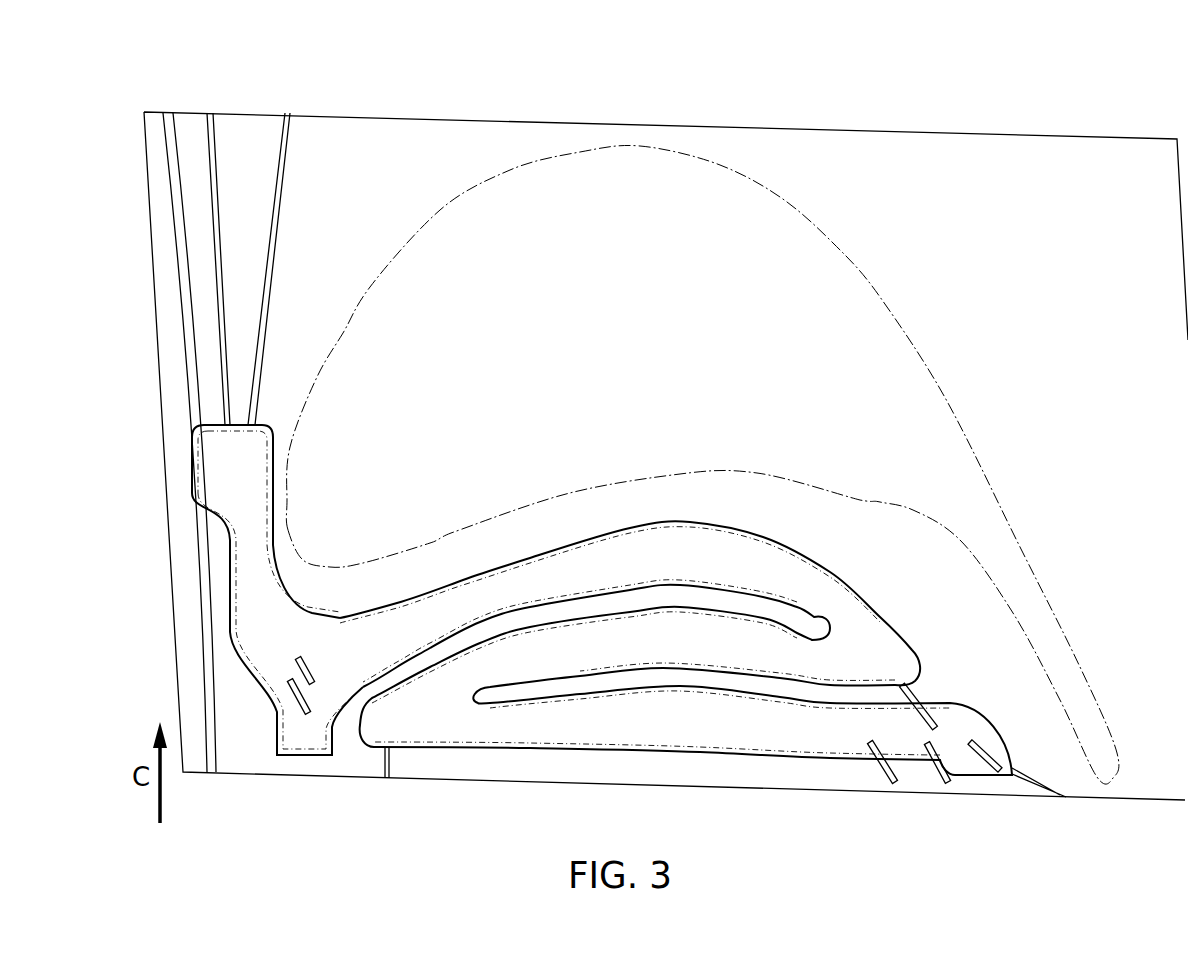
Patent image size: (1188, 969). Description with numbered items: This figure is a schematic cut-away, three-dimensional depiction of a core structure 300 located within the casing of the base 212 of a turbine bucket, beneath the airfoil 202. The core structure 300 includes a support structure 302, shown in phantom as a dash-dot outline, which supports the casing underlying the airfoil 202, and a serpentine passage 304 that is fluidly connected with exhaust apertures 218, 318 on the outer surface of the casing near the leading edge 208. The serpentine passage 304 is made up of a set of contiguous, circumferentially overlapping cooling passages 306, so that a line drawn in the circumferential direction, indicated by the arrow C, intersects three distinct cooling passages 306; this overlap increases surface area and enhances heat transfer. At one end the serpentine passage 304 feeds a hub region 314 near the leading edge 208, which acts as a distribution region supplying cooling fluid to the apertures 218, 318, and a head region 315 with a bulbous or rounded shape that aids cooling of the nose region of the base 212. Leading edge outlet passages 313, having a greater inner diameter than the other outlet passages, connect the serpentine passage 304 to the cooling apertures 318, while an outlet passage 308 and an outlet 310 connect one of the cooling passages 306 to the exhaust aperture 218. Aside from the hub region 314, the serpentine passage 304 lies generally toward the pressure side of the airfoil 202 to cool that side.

The airfoil 202 is at (710, 274).
The leading edge 208 is at (160, 644).
The base 212 is at (928, 106).
The exhaust aperture 218 is at (217, 89).
The core structure 300 is at (259, 757).
The support structure 302 is at (888, 274).
The serpentine passage 304 is at (631, 753).
The cooling passages 306 is at (692, 571).
The outlet passage 308 is at (272, 258).
The outlet 310 is at (226, 134).
The leading edge outlet passage 313 is at (190, 372).
The hub region 314 is at (292, 637).
The head region 315 is at (257, 491).
The cooling aperture 318 is at (174, 90).